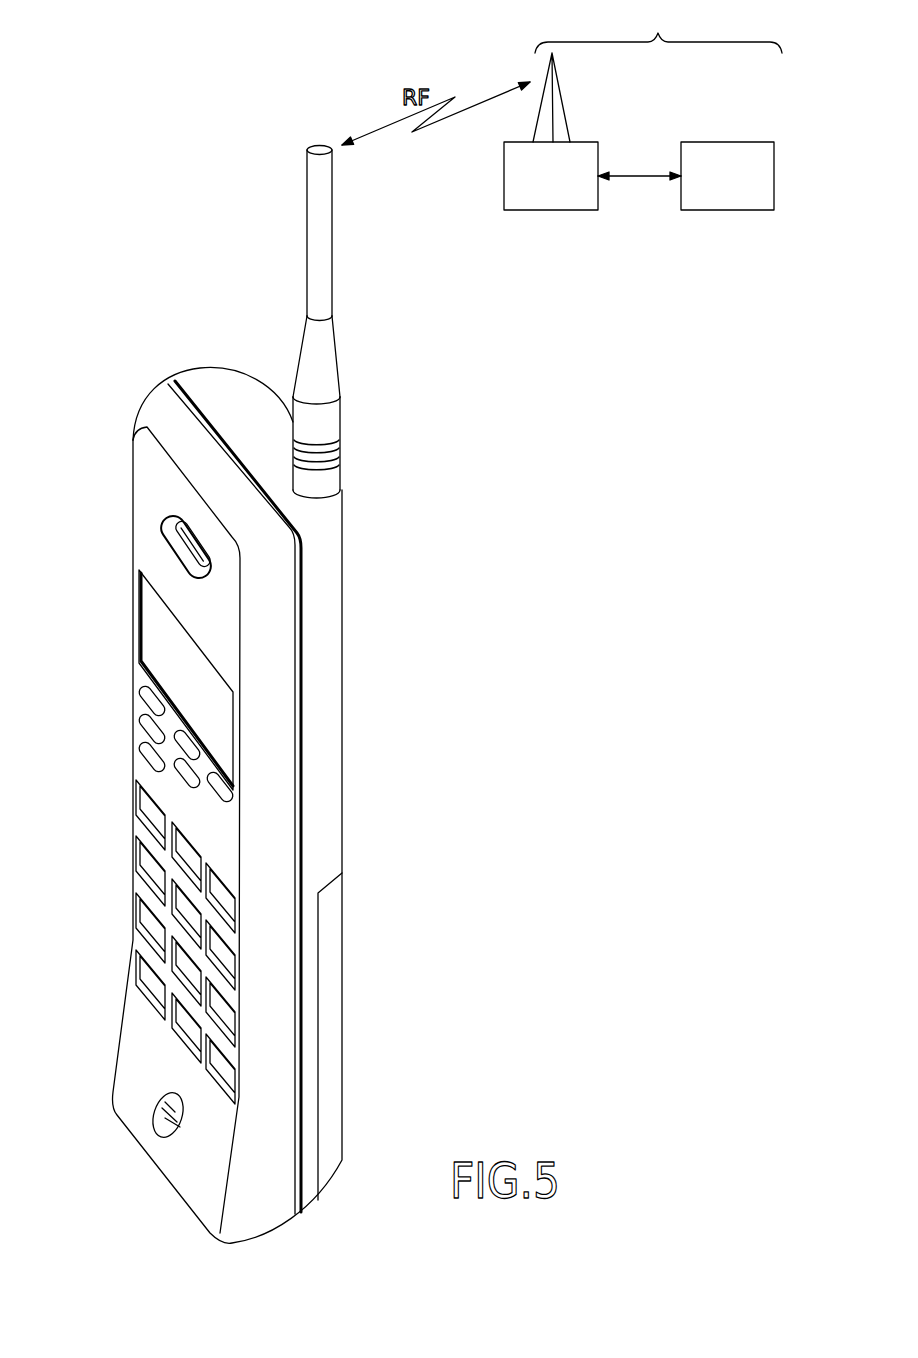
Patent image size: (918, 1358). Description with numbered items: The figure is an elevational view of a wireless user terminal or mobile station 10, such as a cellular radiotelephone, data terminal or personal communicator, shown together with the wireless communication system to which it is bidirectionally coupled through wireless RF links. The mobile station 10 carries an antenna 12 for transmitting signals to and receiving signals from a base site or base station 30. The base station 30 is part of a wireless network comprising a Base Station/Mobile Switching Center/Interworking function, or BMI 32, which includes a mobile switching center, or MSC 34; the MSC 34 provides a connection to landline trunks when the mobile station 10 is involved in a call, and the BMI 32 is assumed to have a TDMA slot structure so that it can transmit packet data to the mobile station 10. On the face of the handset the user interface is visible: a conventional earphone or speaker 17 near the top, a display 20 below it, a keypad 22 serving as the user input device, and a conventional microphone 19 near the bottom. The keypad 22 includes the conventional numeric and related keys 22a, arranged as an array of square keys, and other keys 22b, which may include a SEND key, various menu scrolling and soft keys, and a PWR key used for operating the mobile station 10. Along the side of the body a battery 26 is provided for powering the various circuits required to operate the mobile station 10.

The mobile station 10 is at (110, 375).
The antenna 12 is at (314, 218).
The speaker 17 is at (178, 530).
The microphone 19 is at (165, 1120).
The display 20 is at (155, 633).
The keypad 22 is at (161, 894).
The numeric and related keys 22a is at (148, 977).
The other keys 22b is at (138, 748).
The battery 26 is at (337, 1015).
The base station 30 is at (553, 211).
The Base Station/Mobile Switching Center/Interworking function (BMI) 32 is at (643, 124).
The mobile switching center (MSC) 34 is at (706, 141).